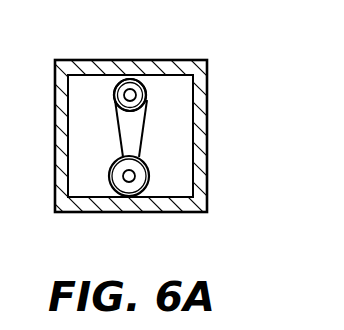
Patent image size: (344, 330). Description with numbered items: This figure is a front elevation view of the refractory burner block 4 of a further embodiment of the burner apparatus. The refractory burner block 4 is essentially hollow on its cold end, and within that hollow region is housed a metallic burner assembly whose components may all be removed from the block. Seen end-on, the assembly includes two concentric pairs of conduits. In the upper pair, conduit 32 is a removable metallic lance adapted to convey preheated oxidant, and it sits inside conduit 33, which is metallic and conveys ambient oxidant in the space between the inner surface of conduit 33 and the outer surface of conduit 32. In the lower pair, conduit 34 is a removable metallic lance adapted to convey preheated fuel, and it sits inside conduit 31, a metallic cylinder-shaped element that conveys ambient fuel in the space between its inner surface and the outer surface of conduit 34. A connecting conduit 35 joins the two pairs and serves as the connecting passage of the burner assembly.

The refractory burner block 4 is at (81, 66).
The conduit 32 is at (131, 88).
The conduit 33 is at (146, 92).
The connecting conduit 35 is at (143, 125).
The conduit 31 is at (145, 190).
The conduit 34 is at (129, 176).